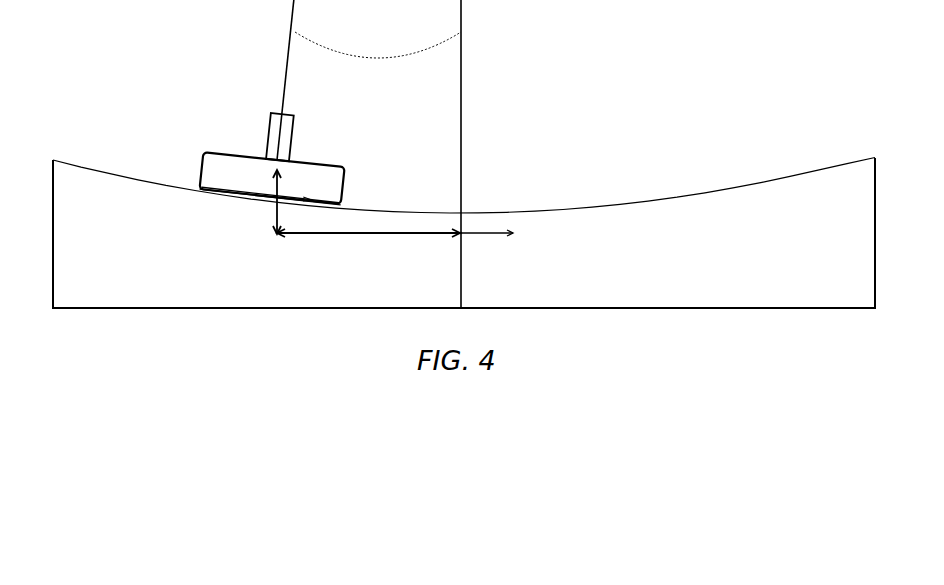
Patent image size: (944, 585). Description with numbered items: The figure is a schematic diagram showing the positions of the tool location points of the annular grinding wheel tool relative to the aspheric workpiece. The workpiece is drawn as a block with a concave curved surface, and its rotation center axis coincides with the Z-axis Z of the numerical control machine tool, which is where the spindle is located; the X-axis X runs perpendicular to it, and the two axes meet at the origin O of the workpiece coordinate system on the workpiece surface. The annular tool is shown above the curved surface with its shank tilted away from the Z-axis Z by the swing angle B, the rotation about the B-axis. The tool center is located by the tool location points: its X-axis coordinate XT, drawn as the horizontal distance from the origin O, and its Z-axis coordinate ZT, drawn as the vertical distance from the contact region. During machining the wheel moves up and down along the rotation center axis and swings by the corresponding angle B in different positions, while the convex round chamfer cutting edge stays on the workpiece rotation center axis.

The B-axis swing angle B is at (378, 45).
The Z-axis Z is at (468, 154).
The X-axis X is at (494, 247).
The origin of the workpiece coordinate system O is at (468, 244).
The Z-axis coordinate of the tool center ZT is at (263, 202).
The X-axis coordinate of the tool center XT is at (368, 224).